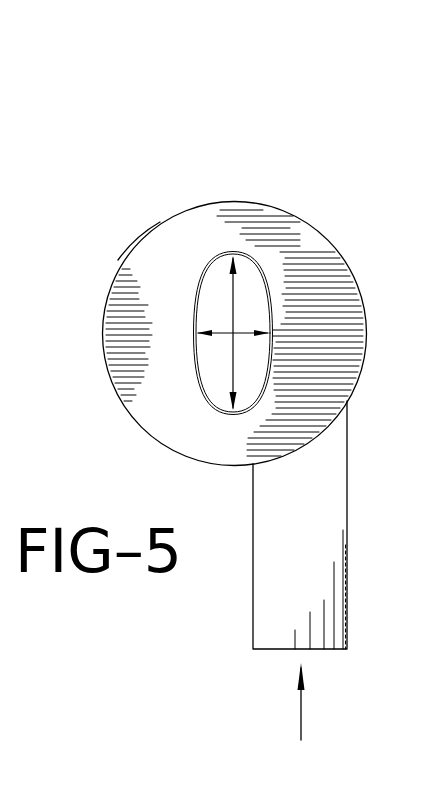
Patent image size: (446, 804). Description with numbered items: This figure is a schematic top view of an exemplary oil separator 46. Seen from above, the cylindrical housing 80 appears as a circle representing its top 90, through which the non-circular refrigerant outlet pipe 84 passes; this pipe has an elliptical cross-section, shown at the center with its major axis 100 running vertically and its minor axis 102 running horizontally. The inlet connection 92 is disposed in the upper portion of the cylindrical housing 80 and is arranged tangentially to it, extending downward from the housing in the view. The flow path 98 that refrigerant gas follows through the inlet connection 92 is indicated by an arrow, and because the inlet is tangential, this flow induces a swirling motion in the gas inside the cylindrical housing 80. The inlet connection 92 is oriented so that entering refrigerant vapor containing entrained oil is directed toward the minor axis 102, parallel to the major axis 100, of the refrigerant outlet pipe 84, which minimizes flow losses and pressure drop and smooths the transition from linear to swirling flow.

The oil separator 46 is at (100, 140).
The cylindrical housing 80 is at (157, 440).
The top 90 is at (160, 243).
The non-circular refrigerant outlet pipe 84 is at (258, 275).
The major axis 100 is at (230, 297).
The minor axis 102 is at (224, 335).
The inlet connection 92 is at (347, 398).
The flow path 98 is at (301, 717).